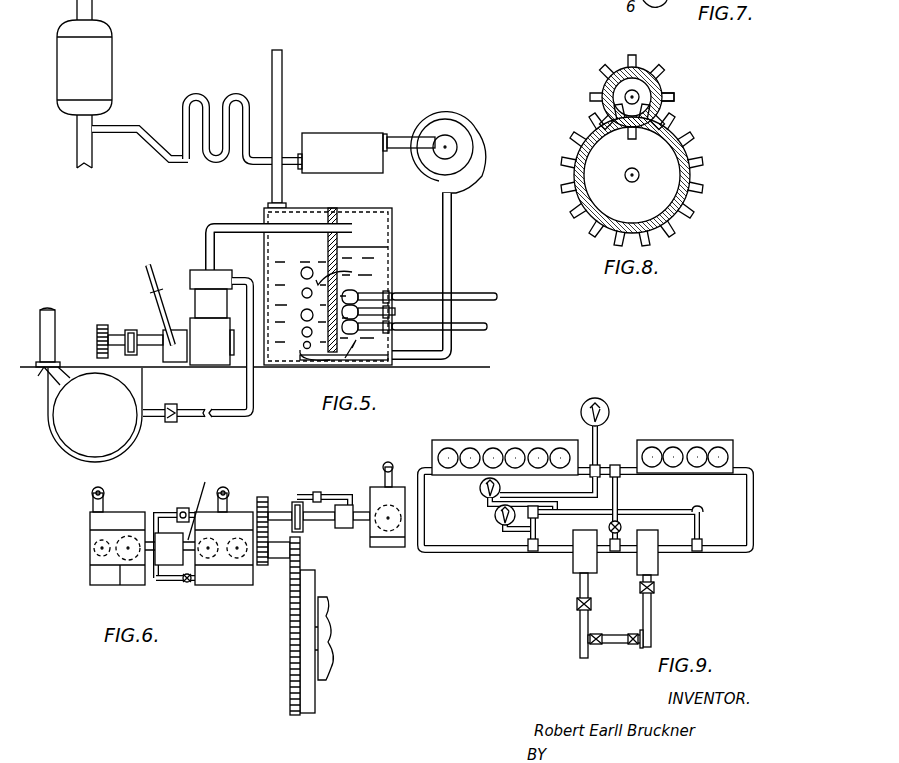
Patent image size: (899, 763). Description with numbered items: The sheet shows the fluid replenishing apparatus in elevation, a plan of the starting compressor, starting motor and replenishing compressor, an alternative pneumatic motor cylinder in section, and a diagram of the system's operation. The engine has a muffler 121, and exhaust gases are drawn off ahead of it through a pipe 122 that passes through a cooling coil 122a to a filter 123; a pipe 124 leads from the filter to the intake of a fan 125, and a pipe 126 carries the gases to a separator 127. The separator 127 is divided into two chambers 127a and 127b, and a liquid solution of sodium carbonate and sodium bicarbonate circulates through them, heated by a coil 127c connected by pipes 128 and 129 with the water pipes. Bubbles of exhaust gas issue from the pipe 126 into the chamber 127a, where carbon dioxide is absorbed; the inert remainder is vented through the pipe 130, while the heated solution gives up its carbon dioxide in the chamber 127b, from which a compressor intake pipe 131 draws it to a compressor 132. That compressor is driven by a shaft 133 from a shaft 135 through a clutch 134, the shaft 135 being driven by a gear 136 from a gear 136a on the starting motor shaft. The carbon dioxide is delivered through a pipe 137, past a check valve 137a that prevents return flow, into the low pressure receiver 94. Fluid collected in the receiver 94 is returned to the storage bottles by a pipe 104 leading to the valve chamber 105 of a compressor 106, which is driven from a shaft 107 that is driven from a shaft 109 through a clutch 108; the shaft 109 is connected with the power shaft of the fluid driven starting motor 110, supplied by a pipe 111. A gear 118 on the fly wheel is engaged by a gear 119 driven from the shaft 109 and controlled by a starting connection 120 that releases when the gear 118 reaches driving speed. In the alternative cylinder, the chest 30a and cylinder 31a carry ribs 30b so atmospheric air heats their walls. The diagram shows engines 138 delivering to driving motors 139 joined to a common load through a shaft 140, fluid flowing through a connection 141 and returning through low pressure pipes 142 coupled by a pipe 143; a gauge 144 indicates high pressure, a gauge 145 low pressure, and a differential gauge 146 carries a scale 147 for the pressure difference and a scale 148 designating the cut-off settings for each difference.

In FIG. 8, the chest 30a is at (643, 77).
In FIG. 8, the ribs 30b is at (682, 129).
In FIG. 8, the cylinder 31a is at (692, 172).
In FIG. 5, the receiver 94 is at (62, 450).
In FIG. 5, the pipe 104 is at (57, 318).
In FIG. 6, the pipe 104 is at (92, 497).
In FIG. 6, the valve chamber 105 is at (100, 548).
In FIG. 6, the compressor 106 is at (100, 562).
In FIG. 6, the shaft 107 is at (152, 512).
In FIG. 6, the clutch 108 is at (166, 558).
In FIG. 6, the shaft 109 is at (212, 504).
In FIG. 6, the starting motor 110 is at (238, 565).
In FIG. 6, the pipe 111 is at (227, 496).
In FIG. 6, the gear 118 is at (291, 654).
In FIG. 6, the gear 119 is at (300, 550).
In FIG. 6, the starting connection 120 is at (285, 568).
In FIG. 5, the muffler 121 is at (102, 67).
In FIG. 5, the pipe 122 is at (147, 140).
In FIG. 5, the cooling coil 122a is at (221, 160).
In FIG. 5, the filter 123 is at (333, 144).
In FIG. 5, the pipe 124 is at (398, 143).
In FIG. 5, the fan 125 is at (458, 145).
In FIG. 5, the pipe 126 is at (451, 254).
In FIG. 5, the separator 127 is at (390, 240).
In FIG. 5, the chamber 127a is at (315, 284).
In FIG. 5, the chamber 127b is at (362, 283).
In FIG. 5, the coil 127c is at (368, 298).
In FIG. 5, the pipe 128 is at (472, 295).
In FIG. 5, the pipe 129 is at (478, 326).
In FIG. 5, the pipe 130 is at (278, 116).
In FIG. 5, the compressor intake pipe 131 is at (229, 226).
In FIG. 6, the compressor intake pipe 131 is at (386, 463).
In FIG. 5, the compressor 132 is at (204, 277).
In FIG. 6, the compressor 132 is at (380, 505).
In FIG. 5, the shaft 133 is at (190, 352).
In FIG. 6, the shaft 133 is at (365, 519).
In FIG. 5, the clutch 134 is at (131, 328).
In FIG. 6, the clutch 134 is at (298, 500).
In FIG. 5, the shaft 135 is at (116, 335).
In FIG. 6, the shaft 135 is at (283, 513).
In FIG. 5, the gear 136 is at (96, 343).
In FIG. 6, the gear 136 is at (257, 504).
In FIG. 6, the gear 136a is at (264, 566).
In FIG. 5, the pipe 137 is at (256, 378).
In FIG. 5, the check valve 137a is at (172, 421).
In FIG. 9, the engines 138 is at (487, 441).
In FIG. 9, the driving motors 139 is at (573, 565).
In FIG. 9, the shaft 140 is at (630, 644).
In FIG. 9, the connection 141 is at (618, 504).
In FIG. 9, the pipes 142 is at (472, 549).
In FIG. 9, the pipe 143 is at (667, 508).
In FIG. 9, the gauge 144 is at (606, 408).
In FIG. 9, the gauge 145 is at (496, 516).
In FIG. 9, the differential gauge 146 is at (480, 489).
In FIG. 9, the scale 147 is at (500, 485).
In FIG. 9, the scale 148 is at (488, 500).